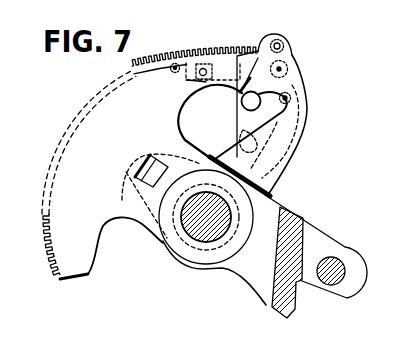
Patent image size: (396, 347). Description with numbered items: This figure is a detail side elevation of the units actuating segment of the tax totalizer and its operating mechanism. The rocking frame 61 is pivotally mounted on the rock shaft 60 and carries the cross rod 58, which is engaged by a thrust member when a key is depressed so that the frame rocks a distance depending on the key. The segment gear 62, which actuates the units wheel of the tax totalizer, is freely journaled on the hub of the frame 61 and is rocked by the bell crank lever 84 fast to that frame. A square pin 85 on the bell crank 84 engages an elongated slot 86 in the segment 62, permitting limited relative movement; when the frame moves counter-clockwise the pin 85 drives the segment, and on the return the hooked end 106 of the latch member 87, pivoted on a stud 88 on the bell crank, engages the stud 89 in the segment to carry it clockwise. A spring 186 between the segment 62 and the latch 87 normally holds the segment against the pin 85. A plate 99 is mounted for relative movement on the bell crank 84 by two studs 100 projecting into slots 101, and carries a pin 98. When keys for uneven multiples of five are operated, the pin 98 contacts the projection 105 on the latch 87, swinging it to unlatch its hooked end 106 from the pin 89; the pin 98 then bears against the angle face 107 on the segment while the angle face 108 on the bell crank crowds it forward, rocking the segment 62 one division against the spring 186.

The spring 186 is at (182, 55).
The latch member 87 is at (231, 56).
The stud 88 is at (289, 67).
The projection 105 is at (243, 92).
The angle face 108 is at (258, 75).
The hooked end 106 is at (192, 73).
The stud 89 is at (197, 78).
The angle face 107 is at (238, 98).
The pin 98 is at (246, 106).
The plate 99 is at (235, 128).
The studs 100 is at (283, 102).
The slots 101 is at (259, 153).
The slot 86 is at (151, 158).
The pin 85 is at (134, 176).
The bell crank lever 84 is at (273, 188).
The rocking frame 61 is at (303, 219).
The segment gear 62 is at (85, 268).
The rock shaft 60 is at (217, 241).
The cross rod 58 is at (332, 285).